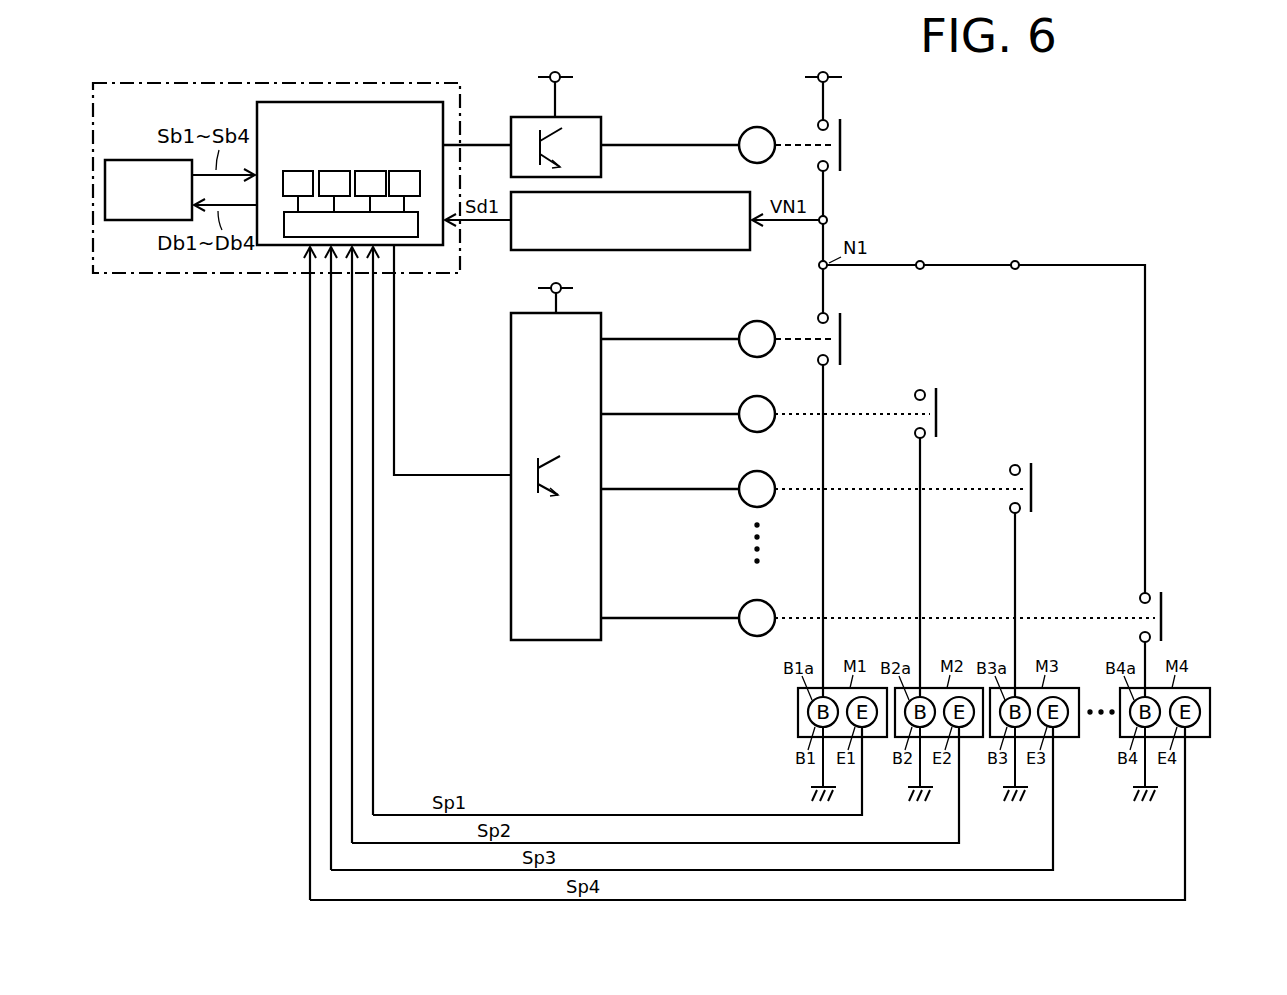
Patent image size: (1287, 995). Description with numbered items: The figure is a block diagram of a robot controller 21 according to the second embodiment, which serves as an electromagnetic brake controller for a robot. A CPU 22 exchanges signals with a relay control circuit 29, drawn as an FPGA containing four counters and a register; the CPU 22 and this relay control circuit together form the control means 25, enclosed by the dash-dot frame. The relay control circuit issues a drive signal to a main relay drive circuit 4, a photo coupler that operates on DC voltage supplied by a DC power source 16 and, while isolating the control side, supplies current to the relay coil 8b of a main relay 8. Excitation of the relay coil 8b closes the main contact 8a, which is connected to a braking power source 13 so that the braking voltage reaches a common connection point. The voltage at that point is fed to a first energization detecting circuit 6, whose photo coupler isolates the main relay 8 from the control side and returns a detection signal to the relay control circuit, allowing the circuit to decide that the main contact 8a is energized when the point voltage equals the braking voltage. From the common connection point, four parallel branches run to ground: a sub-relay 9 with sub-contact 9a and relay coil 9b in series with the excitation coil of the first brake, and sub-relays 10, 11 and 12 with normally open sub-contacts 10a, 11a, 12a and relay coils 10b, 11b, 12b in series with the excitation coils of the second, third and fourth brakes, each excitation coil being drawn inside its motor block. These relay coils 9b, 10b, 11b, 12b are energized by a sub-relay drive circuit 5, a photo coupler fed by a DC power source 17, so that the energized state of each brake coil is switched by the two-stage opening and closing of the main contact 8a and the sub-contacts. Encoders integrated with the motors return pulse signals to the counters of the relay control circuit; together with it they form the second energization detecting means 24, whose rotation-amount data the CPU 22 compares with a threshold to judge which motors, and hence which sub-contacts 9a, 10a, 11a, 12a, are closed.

The main relay drive circuit 4 is at (528, 117).
The sub-relay drive circuit 5 is at (511, 396).
The first energization detecting circuit 6 is at (677, 251).
The main relay 8 is at (808, 130).
The main contact 8a is at (829, 171).
The relay coil 8b is at (752, 128).
The sub-relay 9 is at (808, 320).
The sub-contact 9a is at (836, 314).
The relay coil 9b is at (752, 322).
The sub-relay 10 is at (901, 393).
The sub-contact 10a is at (938, 386).
The relay coil 10b is at (752, 397).
The sub-relay 11 is at (997, 468).
The sub-contact 11a is at (1034, 462).
The relay coil 11b is at (752, 472).
The sub-relay 12 is at (1126, 598).
The sub-contact 12a is at (1164, 588).
The relay coil 12b is at (752, 600).
The braking power source 13 is at (820, 72).
The DC power source 16 is at (553, 72).
The DC power source 17 is at (550, 286).
The robot controller 21 is at (680, 74).
The CPU 22 is at (124, 160).
The second energization detecting means 24 is at (1212, 868).
The control means 25 is at (311, 64).
The relay control circuit (FPGA) 29 is at (257, 114).